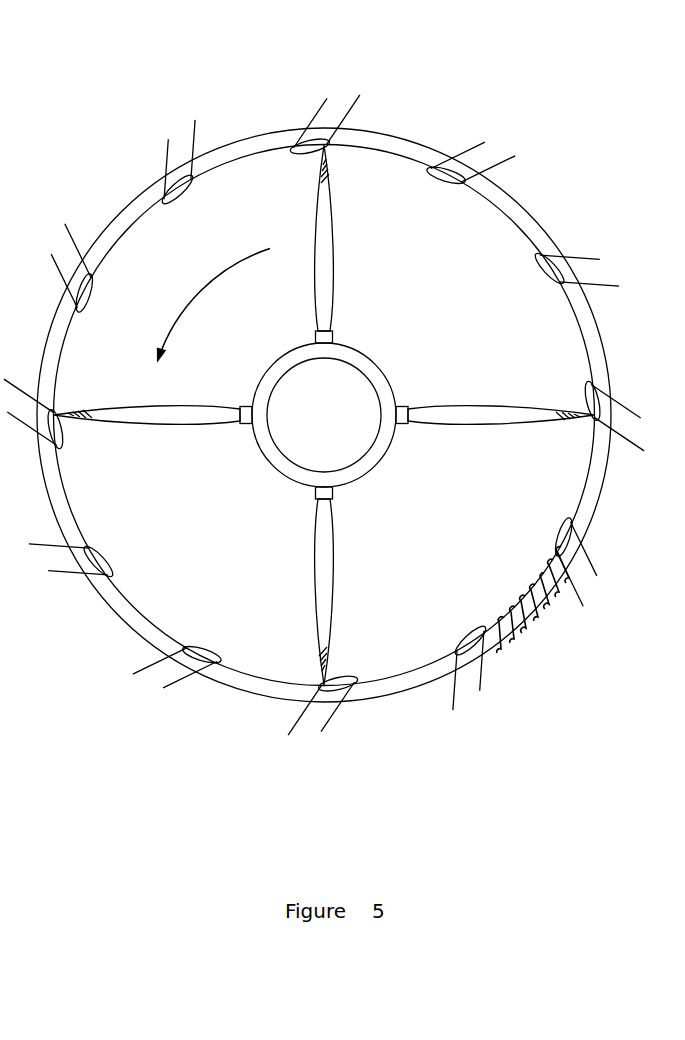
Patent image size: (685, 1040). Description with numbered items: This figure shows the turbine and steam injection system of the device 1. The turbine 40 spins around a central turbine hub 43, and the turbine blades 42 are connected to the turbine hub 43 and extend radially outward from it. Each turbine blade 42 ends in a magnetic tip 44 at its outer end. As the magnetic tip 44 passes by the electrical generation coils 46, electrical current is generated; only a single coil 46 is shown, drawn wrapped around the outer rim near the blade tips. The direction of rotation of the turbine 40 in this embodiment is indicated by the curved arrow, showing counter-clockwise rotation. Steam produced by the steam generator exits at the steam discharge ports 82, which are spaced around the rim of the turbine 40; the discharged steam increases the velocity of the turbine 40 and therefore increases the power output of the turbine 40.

The rotary device 1 is at (597, 273).
The turbine 40 is at (487, 245).
The turbine blade 42 is at (495, 415).
The turbine hub 43 is at (377, 363).
The magnetic tip 44 is at (582, 422).
The electrical generation coil 46 is at (535, 625).
The steam discharge port 82 is at (503, 152).